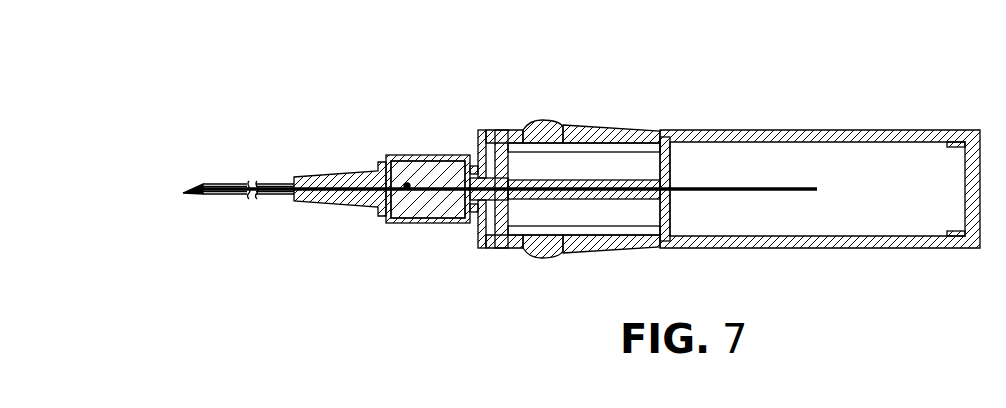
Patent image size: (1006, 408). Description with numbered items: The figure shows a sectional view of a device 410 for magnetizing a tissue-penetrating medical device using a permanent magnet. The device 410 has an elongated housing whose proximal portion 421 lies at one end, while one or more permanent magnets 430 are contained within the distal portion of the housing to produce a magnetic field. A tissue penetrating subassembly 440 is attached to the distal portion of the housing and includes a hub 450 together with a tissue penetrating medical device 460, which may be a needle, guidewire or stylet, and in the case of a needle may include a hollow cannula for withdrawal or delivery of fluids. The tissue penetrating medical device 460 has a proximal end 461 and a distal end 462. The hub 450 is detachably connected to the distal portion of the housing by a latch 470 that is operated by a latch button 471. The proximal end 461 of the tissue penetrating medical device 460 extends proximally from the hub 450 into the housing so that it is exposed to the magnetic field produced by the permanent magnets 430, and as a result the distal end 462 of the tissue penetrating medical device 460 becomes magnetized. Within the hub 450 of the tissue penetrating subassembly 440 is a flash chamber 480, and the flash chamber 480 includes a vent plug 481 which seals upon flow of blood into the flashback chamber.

The device 410 is at (877, 104).
The proximal portion 421 is at (593, 405).
The permanent magnet 430 is at (622, 160).
The tissue penetrating subassembly 440 is at (308, 177).
The hub 450 is at (291, 200).
The tissue penetrating medical device 460 is at (223, 183).
The proximal end 461 is at (284, 188).
The distal end 462 is at (195, 188).
The latch 470 is at (483, 130).
The latch button 471 is at (550, 254).
The flash chamber 480 is at (424, 168).
The vent plug 481 is at (407, 189).